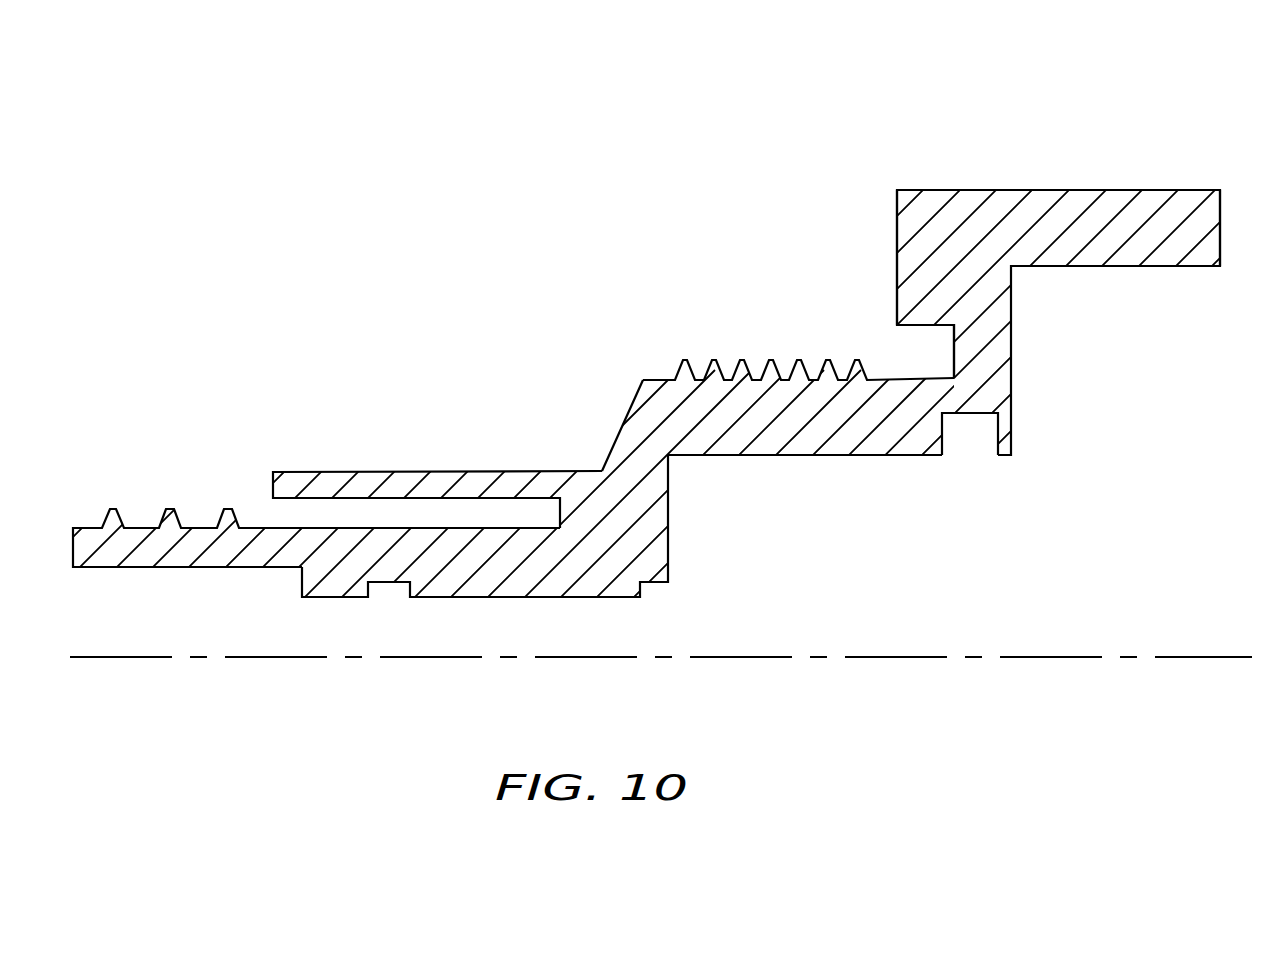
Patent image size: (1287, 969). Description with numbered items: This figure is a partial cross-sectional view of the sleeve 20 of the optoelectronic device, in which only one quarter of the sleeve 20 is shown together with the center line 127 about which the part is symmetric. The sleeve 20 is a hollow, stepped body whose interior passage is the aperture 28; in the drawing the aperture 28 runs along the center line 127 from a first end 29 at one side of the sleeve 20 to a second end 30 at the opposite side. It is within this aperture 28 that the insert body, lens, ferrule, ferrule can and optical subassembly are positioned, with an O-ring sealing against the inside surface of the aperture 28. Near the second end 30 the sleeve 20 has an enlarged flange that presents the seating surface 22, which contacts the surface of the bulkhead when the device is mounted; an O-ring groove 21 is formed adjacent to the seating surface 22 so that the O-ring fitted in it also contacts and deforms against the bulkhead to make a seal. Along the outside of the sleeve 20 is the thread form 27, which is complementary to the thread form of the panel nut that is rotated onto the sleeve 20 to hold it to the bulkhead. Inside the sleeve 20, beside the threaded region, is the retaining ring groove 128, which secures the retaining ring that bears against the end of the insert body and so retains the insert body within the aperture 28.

The sleeve 20 is at (1058, 234).
The O-ring groove 21 is at (850, 213).
The seating surface 22 is at (887, 196).
The thread form 27 is at (798, 288).
The aperture 28 is at (491, 399).
The first end 29 is at (305, 463).
The second end 30 is at (1216, 190).
The center line 127 is at (667, 601).
The retaining ring groove 128 is at (1080, 447).